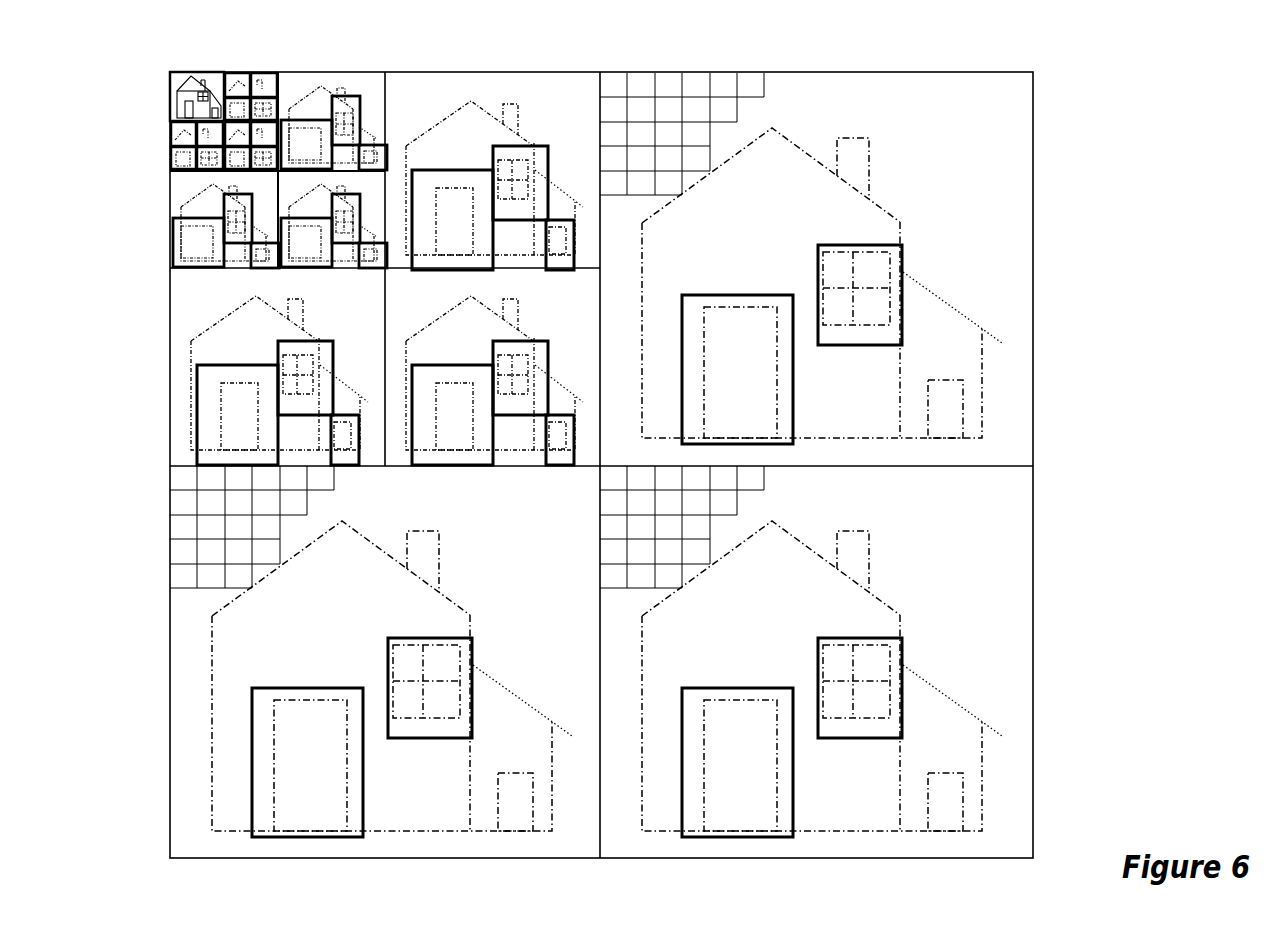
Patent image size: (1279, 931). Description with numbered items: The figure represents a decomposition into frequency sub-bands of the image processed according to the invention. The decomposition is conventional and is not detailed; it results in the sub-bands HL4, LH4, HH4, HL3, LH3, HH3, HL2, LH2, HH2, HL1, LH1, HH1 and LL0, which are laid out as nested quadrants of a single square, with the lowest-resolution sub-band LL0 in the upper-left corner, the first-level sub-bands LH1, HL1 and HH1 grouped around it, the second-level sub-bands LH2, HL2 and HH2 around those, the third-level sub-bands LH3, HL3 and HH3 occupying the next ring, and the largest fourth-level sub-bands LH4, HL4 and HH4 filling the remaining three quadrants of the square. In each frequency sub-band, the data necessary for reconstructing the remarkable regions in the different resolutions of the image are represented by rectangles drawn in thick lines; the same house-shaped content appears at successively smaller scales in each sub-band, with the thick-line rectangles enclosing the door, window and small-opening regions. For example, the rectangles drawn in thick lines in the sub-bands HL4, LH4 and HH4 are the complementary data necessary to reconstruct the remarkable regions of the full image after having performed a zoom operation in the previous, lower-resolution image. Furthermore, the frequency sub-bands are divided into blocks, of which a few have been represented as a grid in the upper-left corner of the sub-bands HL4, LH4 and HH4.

The sub-band LL0 is at (198, 70).
The sub-band LH1 is at (260, 72).
The sub-band HL1 is at (170, 155).
The sub-band HH1 is at (237, 170).
The sub-band LH2 is at (348, 72).
The sub-band HL2 is at (170, 240).
The sub-band HH2 is at (305, 269).
The sub-band LH3 is at (512, 72).
The sub-band HL3 is at (170, 432).
The sub-band HH3 is at (512, 468).
The sub-band LH4 is at (858, 73).
The sub-band HL4 is at (170, 727).
The sub-band HH4 is at (1037, 718).